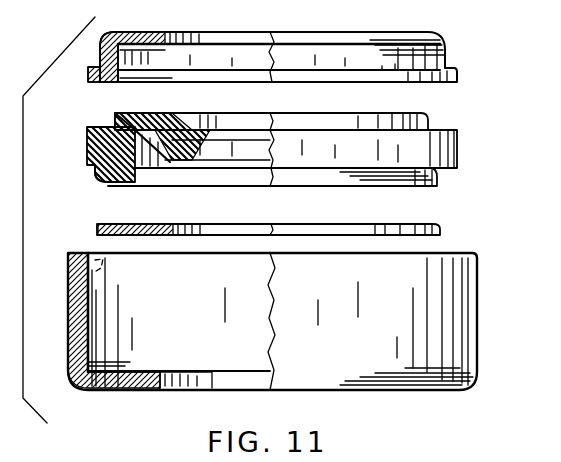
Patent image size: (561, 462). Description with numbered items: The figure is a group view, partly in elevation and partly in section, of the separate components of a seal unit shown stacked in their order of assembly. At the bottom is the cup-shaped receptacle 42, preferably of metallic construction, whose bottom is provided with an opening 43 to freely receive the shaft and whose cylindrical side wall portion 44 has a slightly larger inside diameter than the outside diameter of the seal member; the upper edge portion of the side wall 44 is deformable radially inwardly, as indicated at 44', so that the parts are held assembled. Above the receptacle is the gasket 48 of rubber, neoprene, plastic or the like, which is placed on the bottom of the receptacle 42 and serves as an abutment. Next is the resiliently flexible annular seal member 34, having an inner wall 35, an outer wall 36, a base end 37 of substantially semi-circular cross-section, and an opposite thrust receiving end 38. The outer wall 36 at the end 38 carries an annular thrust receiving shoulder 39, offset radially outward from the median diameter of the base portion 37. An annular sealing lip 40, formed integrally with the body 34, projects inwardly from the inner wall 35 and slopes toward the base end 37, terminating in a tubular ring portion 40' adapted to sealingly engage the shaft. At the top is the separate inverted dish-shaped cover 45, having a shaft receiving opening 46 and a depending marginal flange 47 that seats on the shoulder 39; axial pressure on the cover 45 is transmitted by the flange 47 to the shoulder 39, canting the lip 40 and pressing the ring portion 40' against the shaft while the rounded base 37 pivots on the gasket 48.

The seal member 34 is at (80, 154).
The inner wall 35 is at (139, 179).
The outer wall 36 is at (87, 133).
The base end 37 is at (104, 181).
The thrust receiving end 38 is at (128, 113).
The thrust receiving shoulder 39 is at (96, 124).
The sealing lip 40 is at (184, 126).
The tubular ring portion 40' is at (193, 174).
The receptacle 42 is at (91, 398).
The opening 43 is at (205, 385).
The side wall portion 44 is at (243, 321).
The radially inwardly deformable upper edge portion 44' is at (135, 284).
The cover 45 is at (403, 33).
The shaft receiving opening 46 is at (241, 37).
The marginal flange 47 is at (90, 75).
The gasket 48 is at (100, 228).